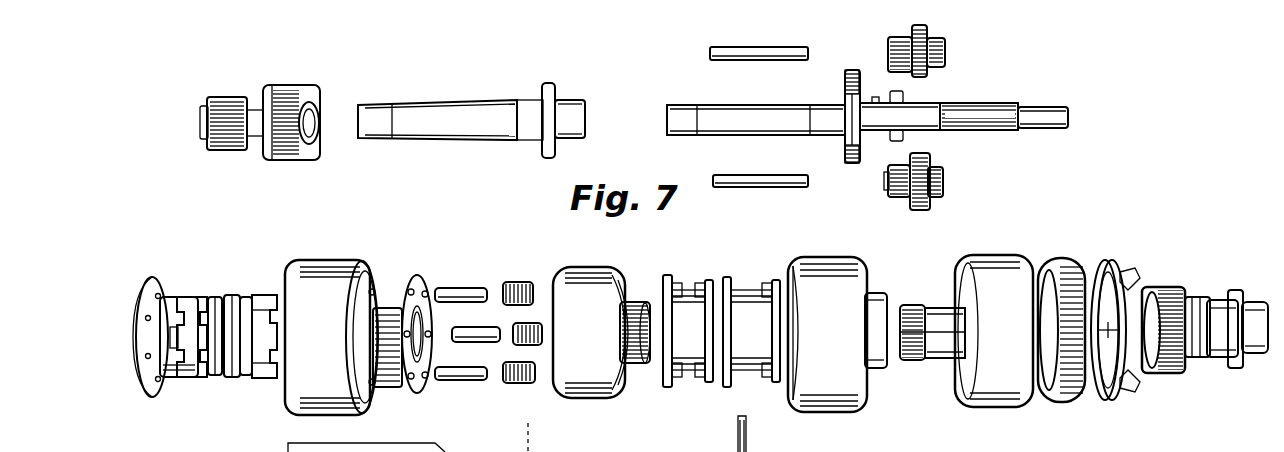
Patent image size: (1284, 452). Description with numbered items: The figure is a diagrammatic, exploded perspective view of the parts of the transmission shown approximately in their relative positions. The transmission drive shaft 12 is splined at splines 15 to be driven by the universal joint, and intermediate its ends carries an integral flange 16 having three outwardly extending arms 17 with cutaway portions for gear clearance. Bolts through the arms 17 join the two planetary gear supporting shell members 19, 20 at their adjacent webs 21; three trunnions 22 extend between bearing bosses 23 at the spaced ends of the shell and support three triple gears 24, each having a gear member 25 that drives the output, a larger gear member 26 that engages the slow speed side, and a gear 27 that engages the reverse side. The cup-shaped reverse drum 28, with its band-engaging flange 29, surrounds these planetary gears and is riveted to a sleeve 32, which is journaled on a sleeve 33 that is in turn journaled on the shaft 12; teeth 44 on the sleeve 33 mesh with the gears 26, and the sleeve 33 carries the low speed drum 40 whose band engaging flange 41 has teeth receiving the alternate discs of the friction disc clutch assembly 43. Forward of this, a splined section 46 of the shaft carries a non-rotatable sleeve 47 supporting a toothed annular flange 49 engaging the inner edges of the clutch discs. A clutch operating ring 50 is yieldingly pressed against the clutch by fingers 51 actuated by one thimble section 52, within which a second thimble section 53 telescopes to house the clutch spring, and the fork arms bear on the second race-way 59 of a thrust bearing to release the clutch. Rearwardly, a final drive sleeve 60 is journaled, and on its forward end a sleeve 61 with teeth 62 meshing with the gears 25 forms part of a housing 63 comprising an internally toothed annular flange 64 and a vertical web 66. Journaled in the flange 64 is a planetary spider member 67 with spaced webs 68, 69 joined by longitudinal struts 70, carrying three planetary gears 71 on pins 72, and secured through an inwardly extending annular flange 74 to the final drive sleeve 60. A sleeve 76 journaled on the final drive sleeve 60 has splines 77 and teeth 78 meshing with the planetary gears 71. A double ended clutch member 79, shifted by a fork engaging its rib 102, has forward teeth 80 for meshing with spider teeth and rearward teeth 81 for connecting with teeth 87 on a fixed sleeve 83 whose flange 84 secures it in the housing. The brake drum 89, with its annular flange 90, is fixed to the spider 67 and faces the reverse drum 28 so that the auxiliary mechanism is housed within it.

The transmission drive shaft 12 is at (730, 133).
The splines 15 is at (1050, 107).
The flange 16 is at (846, 140).
The outwardly extending arms 17 is at (847, 80).
The planetary gear supporting shell member 19 is at (688, 331).
The planetary gear supporting shell member 20 is at (751, 332).
The webs 21 is at (710, 282).
The trunnions 22 is at (772, 60).
The bearing bosses 23 is at (676, 284).
The triple gears 24 is at (904, 38).
The gear member 25 is at (892, 188).
The gear member 26 is at (919, 155).
The gear 27 is at (940, 190).
The reverse drum 28 is at (827, 334).
The flange 29 is at (797, 398).
The sleeve 32 is at (878, 312).
The sleeve 33 is at (932, 332).
The low speed drum 40 is at (994, 331).
The band engaging flange 41 is at (980, 331).
The friction disc clutch assembly 43 is at (1062, 262).
The teeth 44 is at (908, 362).
The splined section 46 is at (968, 103).
The sleeve 47 is at (1192, 298).
The annular flange 49 is at (1165, 373).
The clutch operating ring 50 is at (1112, 262).
The fingers 51 is at (1136, 276).
The thimble section 52 is at (1222, 328).
The thimble section 53 is at (1256, 353).
The race-way 59 is at (1238, 290).
The final drive sleeve 60 is at (471, 120).
The sleeve 61 is at (632, 366).
The teeth 62 is at (636, 302).
The housing 63 is at (589, 332).
The annular flange 64 is at (596, 332).
The vertical web 66 is at (625, 277).
The planetary spider member 67 is at (372, 285).
The web 68 is at (385, 308).
The web 69 is at (421, 283).
The longitudinal struts 70 is at (392, 288).
The planetary gears 71 is at (510, 283).
The pins 72 is at (490, 329).
The annular flange 74 is at (421, 312).
The sleeve 76 is at (258, 150).
The splines 77 is at (240, 98).
The teeth 78 is at (290, 90).
The double ended clutch member 79 is at (232, 378).
The teeth 80 is at (268, 296).
The teeth 81 is at (212, 297).
The fixed sleeve 83 is at (185, 378).
The flange 84 is at (152, 290).
The teeth 87 is at (176, 300).
The brake drum 89 is at (327, 337).
The annular flange 90 is at (287, 385).
The rib 102 is at (240, 284).